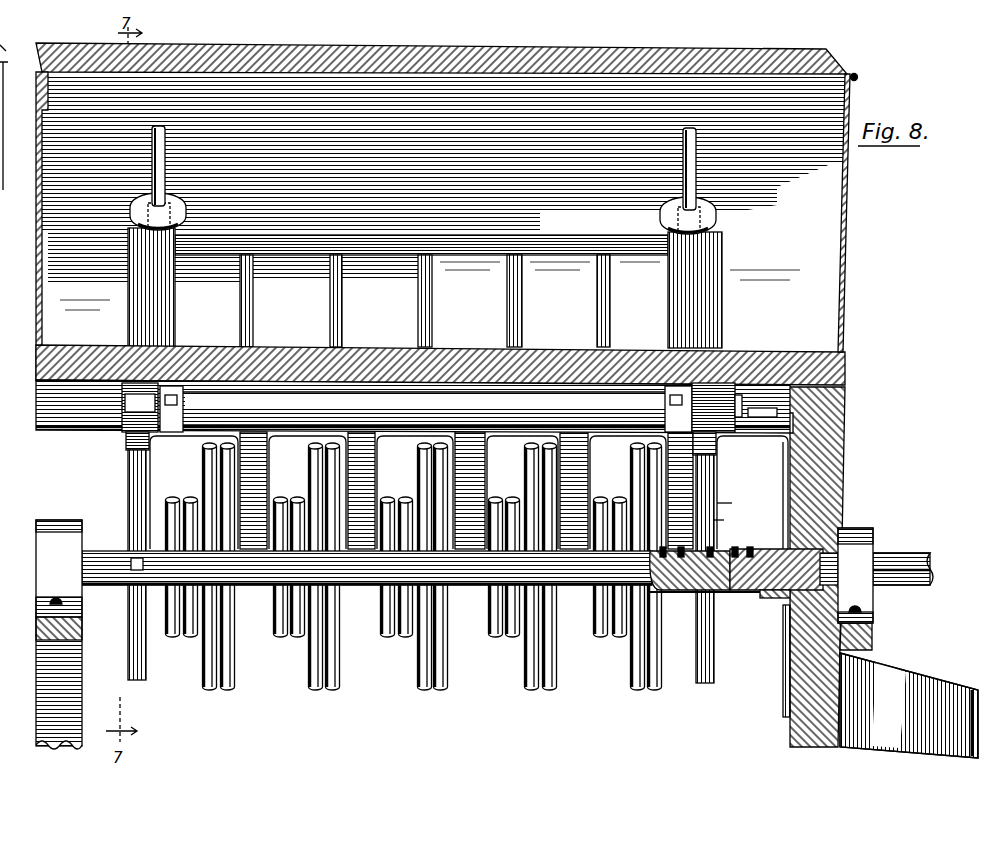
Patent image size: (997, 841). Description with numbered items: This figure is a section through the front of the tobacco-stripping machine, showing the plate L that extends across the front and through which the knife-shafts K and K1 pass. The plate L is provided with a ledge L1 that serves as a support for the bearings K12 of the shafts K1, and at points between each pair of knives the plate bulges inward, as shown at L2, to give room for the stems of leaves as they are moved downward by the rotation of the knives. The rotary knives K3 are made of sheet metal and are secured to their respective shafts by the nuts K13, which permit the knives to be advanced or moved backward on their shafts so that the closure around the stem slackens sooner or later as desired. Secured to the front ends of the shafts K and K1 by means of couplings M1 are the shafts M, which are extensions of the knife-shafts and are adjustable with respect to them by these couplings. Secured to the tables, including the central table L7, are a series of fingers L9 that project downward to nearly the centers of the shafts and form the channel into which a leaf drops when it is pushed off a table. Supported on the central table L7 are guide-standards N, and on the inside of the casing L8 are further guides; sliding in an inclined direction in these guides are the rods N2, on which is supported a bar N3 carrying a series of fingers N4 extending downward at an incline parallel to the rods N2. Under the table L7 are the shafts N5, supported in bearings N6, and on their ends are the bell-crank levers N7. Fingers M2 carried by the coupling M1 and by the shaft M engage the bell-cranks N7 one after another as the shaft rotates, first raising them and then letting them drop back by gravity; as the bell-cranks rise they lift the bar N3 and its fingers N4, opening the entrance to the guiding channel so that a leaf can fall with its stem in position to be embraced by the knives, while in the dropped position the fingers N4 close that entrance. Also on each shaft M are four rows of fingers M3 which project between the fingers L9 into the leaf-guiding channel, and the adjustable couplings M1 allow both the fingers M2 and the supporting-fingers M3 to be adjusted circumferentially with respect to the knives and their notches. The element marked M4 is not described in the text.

The plate L is at (813, 747).
The ledge L1 is at (873, 630).
The inward bulge L2 is at (890, 737).
The central table L7 is at (36, 360).
The casing L8 is at (840, 212).
The fingers L9 is at (383, 450).
The guide-standards N is at (171, 292).
The pins or rods N2 is at (170, 163).
The bar N3 is at (538, 258).
The fingers N4 is at (347, 305).
The shafts N5 is at (394, 400).
The bearings N6 is at (152, 440).
The bell-crank levers N7 is at (63, 323).
The shafts M is at (125, 543).
The couplings M1 is at (732, 525).
The fingers M2 is at (130, 477).
The fingers M3 is at (398, 636).
The collar M4 is at (736, 499).
The shafts K is at (736, 569).
The shafts K1 is at (920, 557).
The rotary knives or blades K3 is at (784, 678).
The bearings K12 is at (852, 527).
The nuts K13 is at (767, 600).